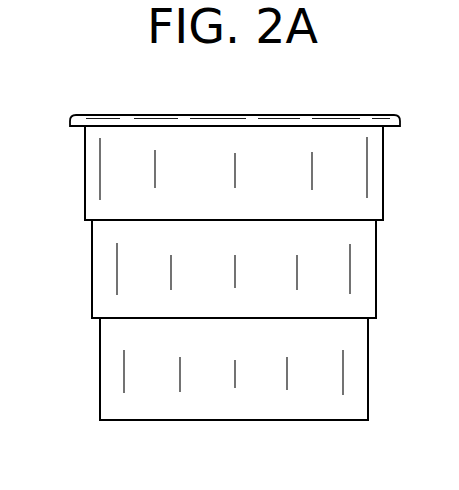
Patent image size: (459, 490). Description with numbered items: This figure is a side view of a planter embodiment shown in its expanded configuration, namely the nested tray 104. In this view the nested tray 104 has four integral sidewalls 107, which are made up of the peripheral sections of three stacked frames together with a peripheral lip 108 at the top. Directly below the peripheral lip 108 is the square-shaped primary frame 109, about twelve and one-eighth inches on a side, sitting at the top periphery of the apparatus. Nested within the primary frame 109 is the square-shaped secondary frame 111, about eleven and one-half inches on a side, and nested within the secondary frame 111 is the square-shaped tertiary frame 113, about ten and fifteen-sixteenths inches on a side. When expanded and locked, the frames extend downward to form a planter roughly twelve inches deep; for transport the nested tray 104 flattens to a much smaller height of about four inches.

The nested tray 104 is at (373, 101).
The integral sidewalls 107 is at (65, 425).
The peripheral lip 108 is at (71, 120).
The primary frame 109 is at (383, 162).
The secondary frame 111 is at (376, 258).
The tertiary frame 113 is at (368, 362).